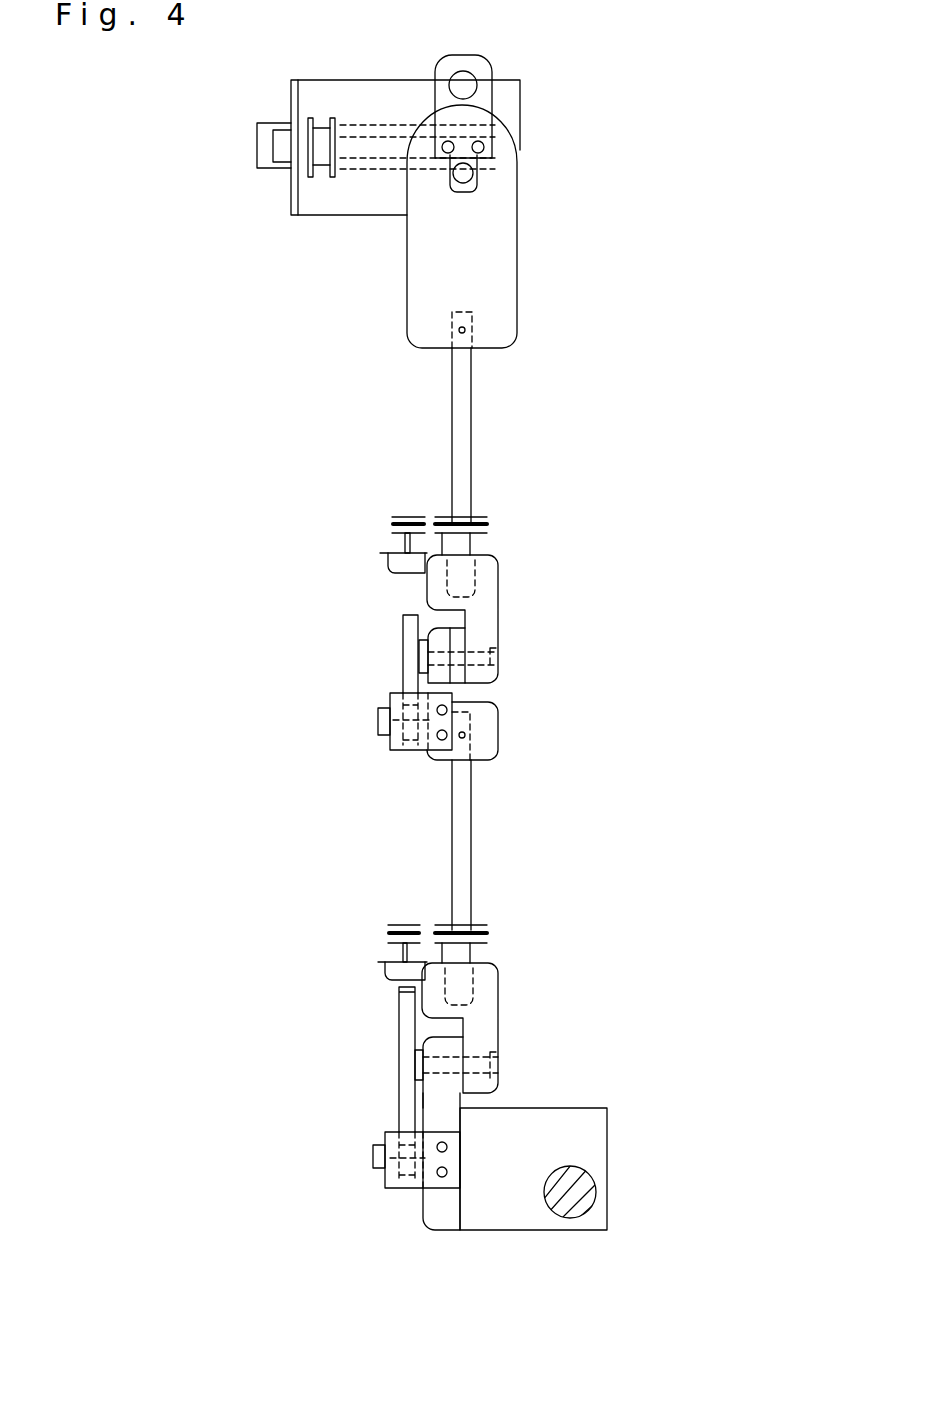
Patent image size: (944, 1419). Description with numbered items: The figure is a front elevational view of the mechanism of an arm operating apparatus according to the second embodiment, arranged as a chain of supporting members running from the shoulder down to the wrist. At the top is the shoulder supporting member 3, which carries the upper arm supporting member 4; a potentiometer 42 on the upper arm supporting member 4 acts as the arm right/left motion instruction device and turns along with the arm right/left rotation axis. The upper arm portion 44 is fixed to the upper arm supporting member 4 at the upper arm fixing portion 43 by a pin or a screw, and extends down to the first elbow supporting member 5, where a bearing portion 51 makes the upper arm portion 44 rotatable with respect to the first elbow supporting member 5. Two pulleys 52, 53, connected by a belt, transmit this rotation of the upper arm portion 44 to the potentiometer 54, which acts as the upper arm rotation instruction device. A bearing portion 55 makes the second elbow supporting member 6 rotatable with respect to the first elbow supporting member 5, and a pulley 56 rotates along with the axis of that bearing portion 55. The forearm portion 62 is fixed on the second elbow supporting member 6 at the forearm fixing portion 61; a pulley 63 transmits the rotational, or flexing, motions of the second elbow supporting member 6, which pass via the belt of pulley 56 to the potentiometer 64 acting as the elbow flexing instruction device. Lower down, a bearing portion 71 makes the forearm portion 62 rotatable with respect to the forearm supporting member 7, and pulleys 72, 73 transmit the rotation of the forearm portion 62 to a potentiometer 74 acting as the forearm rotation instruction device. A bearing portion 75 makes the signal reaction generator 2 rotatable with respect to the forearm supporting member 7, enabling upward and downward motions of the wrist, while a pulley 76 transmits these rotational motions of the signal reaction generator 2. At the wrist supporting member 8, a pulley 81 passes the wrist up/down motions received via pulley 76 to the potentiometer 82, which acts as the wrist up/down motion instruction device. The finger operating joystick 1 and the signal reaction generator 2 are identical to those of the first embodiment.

The finger operating joystick 1 is at (580, 1195).
The signal reaction generator 2 is at (603, 1138).
The shoulder supporting member 3 is at (312, 88).
The upper arm supporting member 4 is at (493, 330).
The potentiometer 42 is at (468, 188).
The upper arm fixing portion 43 is at (470, 348).
The upper arm portion 44 is at (472, 448).
The first elbow supporting member 5 is at (497, 682).
The bearing portion 51 is at (477, 580).
The pulley 52 is at (480, 525).
The pulley 53 is at (398, 530).
The potentiometer 54 is at (402, 565).
The bearing portion 55 is at (470, 655).
The pulley 56 is at (407, 650).
The second elbow supporting member 6 is at (485, 742).
The forearm fixing portion 61 is at (460, 748).
The forearm portion 62 is at (473, 884).
The pulley 63 is at (407, 735).
The potentiometer 64 is at (378, 722).
The forearm supporting member 7 is at (484, 1037).
The bearing portion 71 is at (475, 995).
The pulley 72 is at (490, 935).
The pulley 73 is at (392, 938).
The potentiometer 74 is at (385, 975).
The bearing portion 75 is at (483, 1065).
The pulley 76 is at (400, 1070).
The wrist supporting member 8 is at (442, 1218).
The pulley 81 is at (405, 1172).
The potentiometer 82 is at (373, 1163).